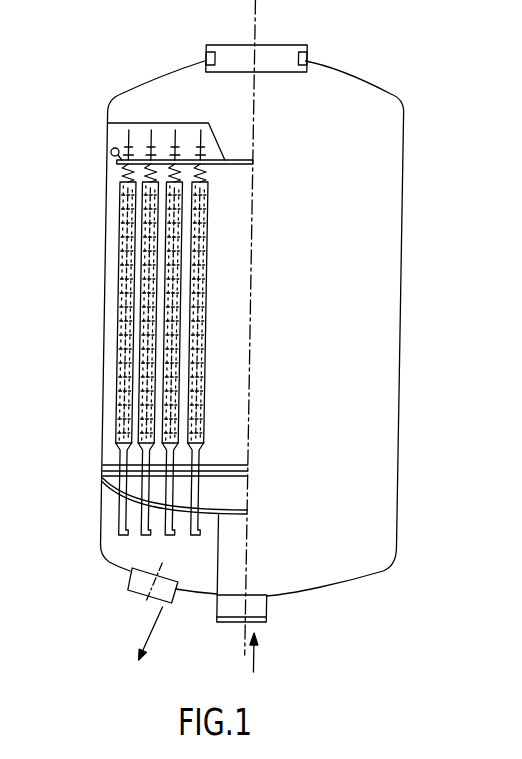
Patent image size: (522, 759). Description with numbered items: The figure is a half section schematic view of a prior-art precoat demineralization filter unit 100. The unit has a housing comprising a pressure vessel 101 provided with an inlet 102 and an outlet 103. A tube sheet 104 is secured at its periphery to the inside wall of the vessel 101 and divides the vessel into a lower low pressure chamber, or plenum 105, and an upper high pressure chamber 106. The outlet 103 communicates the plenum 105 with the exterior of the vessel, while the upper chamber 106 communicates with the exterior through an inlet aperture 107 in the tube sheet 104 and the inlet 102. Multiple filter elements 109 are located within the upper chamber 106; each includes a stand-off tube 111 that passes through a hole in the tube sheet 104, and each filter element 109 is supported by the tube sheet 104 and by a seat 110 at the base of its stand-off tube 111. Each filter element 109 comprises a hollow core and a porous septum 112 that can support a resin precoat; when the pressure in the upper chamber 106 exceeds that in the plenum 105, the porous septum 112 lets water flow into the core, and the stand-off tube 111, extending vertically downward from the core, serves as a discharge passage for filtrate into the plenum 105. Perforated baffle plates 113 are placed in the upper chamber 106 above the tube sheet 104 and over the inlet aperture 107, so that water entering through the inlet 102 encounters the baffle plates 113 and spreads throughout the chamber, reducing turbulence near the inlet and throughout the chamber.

The demineralization filter unit 100 is at (350, 327).
The pressure vessel 101 is at (405, 272).
The inlet 102 is at (265, 622).
The outlet 103 is at (135, 589).
The tube sheet 104 is at (108, 487).
The plenum 105 is at (210, 570).
The upper high pressure chamber 106 is at (218, 113).
The inlet aperture 107 is at (231, 508).
The filter element 109 is at (122, 199).
The seat 110 is at (124, 523).
The stand-off tube 111 is at (108, 460).
The porous septum 112 is at (124, 266).
The perforated baffle plates 113 is at (229, 465).